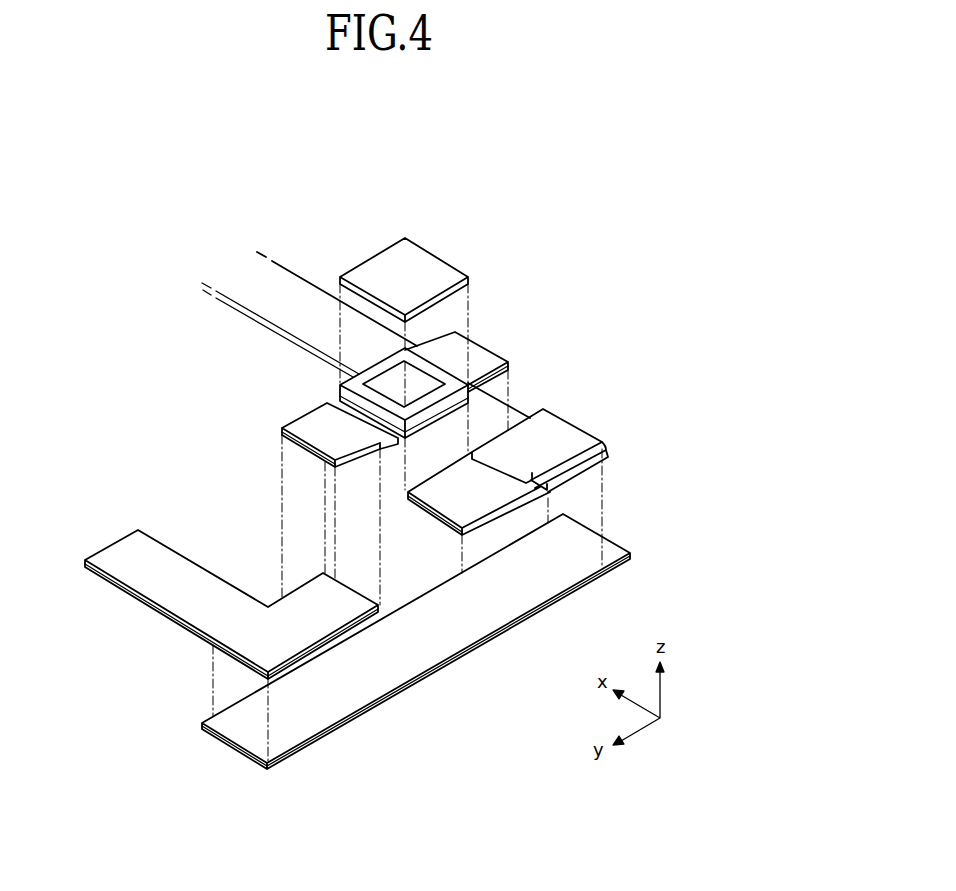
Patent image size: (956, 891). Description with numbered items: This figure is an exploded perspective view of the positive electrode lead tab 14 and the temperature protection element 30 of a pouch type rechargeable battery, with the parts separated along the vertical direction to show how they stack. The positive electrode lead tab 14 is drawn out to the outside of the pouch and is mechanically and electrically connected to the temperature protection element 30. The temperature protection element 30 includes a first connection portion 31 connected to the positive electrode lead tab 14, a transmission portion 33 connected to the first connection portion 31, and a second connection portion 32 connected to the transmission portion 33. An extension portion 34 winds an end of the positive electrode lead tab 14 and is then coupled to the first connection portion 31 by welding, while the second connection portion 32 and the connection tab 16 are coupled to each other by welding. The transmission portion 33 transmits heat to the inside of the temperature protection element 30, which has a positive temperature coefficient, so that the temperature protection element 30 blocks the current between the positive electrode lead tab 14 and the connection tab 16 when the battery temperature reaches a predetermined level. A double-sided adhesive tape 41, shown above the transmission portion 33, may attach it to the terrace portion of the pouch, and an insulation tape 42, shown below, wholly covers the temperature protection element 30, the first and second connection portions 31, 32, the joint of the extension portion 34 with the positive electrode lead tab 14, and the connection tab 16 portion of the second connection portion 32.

The positive electrode lead tab 14 is at (283, 315).
The connection tab 16 is at (145, 570).
The temperature protection element 30 is at (586, 274).
The first connection portion 31 is at (488, 360).
The second connection portion 32 is at (412, 383).
The transmission portion 33 is at (312, 423).
The extension portion 34 is at (472, 500).
The double-sided adhesive tape 41 is at (412, 265).
The insulation tape 42 is at (412, 653).